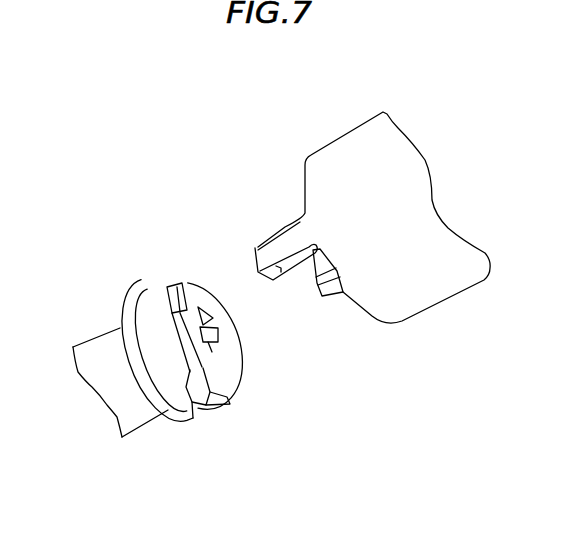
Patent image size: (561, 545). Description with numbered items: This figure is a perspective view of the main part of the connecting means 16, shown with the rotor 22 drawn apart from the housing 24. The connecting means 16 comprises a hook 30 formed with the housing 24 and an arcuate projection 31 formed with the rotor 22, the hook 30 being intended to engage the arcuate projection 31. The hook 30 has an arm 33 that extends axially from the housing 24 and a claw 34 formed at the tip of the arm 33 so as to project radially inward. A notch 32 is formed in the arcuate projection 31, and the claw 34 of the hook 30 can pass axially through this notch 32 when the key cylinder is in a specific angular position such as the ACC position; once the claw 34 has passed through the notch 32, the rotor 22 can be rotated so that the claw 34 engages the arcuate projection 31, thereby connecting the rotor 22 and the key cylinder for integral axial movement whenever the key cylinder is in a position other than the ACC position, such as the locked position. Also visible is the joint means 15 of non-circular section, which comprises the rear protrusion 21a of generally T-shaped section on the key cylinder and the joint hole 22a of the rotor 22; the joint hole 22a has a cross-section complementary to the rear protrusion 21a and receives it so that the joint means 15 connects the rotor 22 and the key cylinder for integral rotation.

The joint means 15 is at (329, 303).
The connecting means 16 is at (191, 173).
The rear protrusion 21a is at (320, 293).
The rotor 22 is at (102, 360).
The joint hole 22a is at (246, 365).
The housing 24 is at (453, 296).
The hook 30 is at (267, 205).
The arcuate projection 31 is at (188, 421).
The notch 32 is at (162, 287).
The arm 33 is at (291, 238).
The claw 34 is at (279, 280).